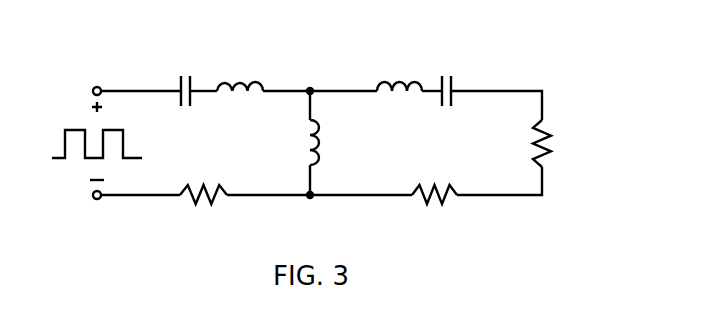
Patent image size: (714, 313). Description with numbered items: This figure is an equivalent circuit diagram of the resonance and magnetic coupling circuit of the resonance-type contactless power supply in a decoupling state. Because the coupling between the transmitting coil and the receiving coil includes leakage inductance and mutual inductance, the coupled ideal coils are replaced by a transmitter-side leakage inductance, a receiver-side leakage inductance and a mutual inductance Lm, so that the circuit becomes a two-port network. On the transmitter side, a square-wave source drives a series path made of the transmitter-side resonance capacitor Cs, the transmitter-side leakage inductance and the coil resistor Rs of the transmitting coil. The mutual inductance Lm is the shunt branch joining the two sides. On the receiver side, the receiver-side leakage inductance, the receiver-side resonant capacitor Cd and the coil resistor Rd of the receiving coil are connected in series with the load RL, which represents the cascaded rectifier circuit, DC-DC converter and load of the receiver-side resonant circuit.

The transmitter-side resonance capacitor Cs is at (185, 78).
The coil resistor Rs is at (203, 181).
The mutual inductance Lm is at (295, 142).
The receiver-side resonant capacitor Cd is at (447, 78).
The coil resistor Rd is at (434, 181).
The load RL is at (564, 143).